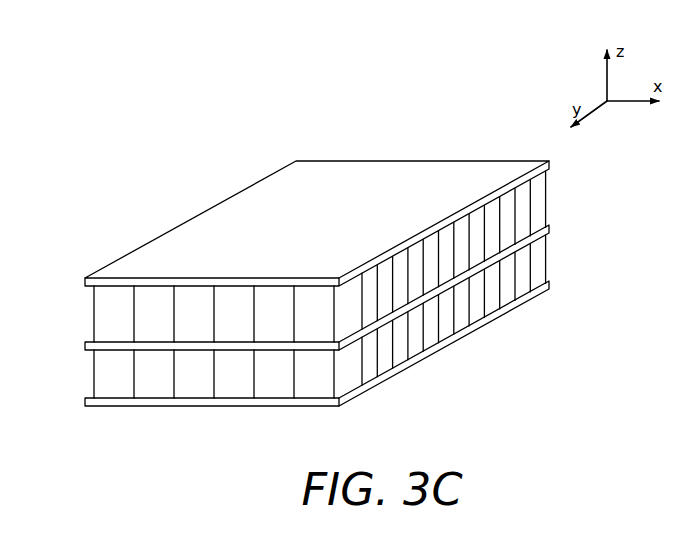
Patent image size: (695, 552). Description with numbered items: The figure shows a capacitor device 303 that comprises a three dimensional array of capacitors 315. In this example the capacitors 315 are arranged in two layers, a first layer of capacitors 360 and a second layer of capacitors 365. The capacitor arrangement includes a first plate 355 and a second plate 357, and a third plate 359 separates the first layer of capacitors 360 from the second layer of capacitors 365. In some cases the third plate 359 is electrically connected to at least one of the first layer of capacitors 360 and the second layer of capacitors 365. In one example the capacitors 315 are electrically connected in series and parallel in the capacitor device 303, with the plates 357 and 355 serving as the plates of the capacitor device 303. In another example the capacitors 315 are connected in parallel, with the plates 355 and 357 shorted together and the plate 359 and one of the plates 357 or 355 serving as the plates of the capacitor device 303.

The capacitor device 303 is at (199, 102).
The second plate 357 is at (192, 236).
The third plate 359 is at (85, 347).
The first plate 355 is at (155, 399).
The second layer of capacitors 365 is at (554, 200).
The first layer of capacitors 360 is at (549, 257).
The capacitors 315 is at (362, 282).